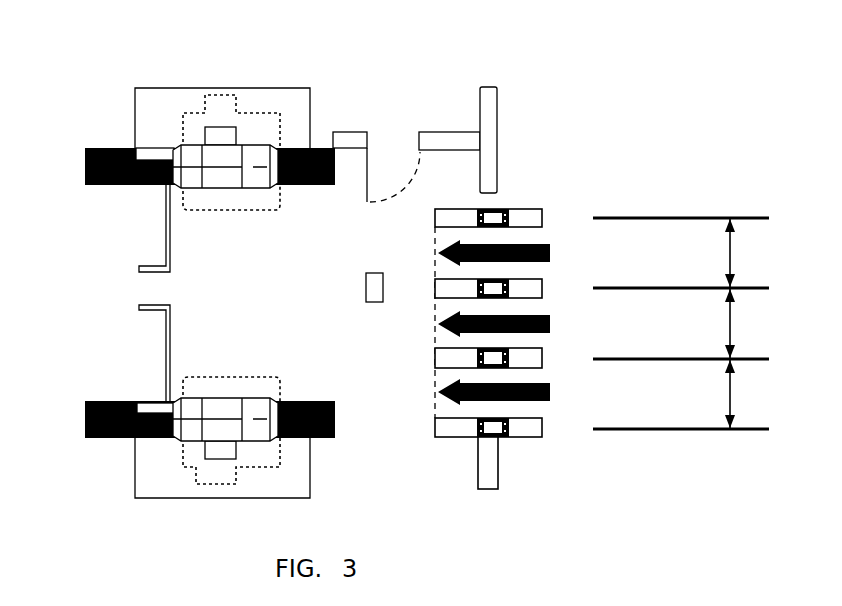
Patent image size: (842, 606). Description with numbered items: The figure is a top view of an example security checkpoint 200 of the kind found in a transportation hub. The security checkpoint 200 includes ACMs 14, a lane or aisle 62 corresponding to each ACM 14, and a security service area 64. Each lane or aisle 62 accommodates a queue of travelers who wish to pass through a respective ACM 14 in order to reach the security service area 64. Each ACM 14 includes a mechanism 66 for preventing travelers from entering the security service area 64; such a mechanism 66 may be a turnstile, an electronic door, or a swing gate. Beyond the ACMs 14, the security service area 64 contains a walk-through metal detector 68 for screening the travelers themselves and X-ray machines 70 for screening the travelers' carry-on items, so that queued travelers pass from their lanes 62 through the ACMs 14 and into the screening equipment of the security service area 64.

The security checkpoint 200 is at (87, 35).
The X-ray machines 70 is at (202, 88).
The security service area 64 is at (209, 256).
The walk-through metal detector 68 is at (373, 273).
The mechanism for preventing travelers from entering the security service area 66 is at (435, 243).
The ACM 14 is at (527, 209).
The lane or aisle 62 is at (681, 323).